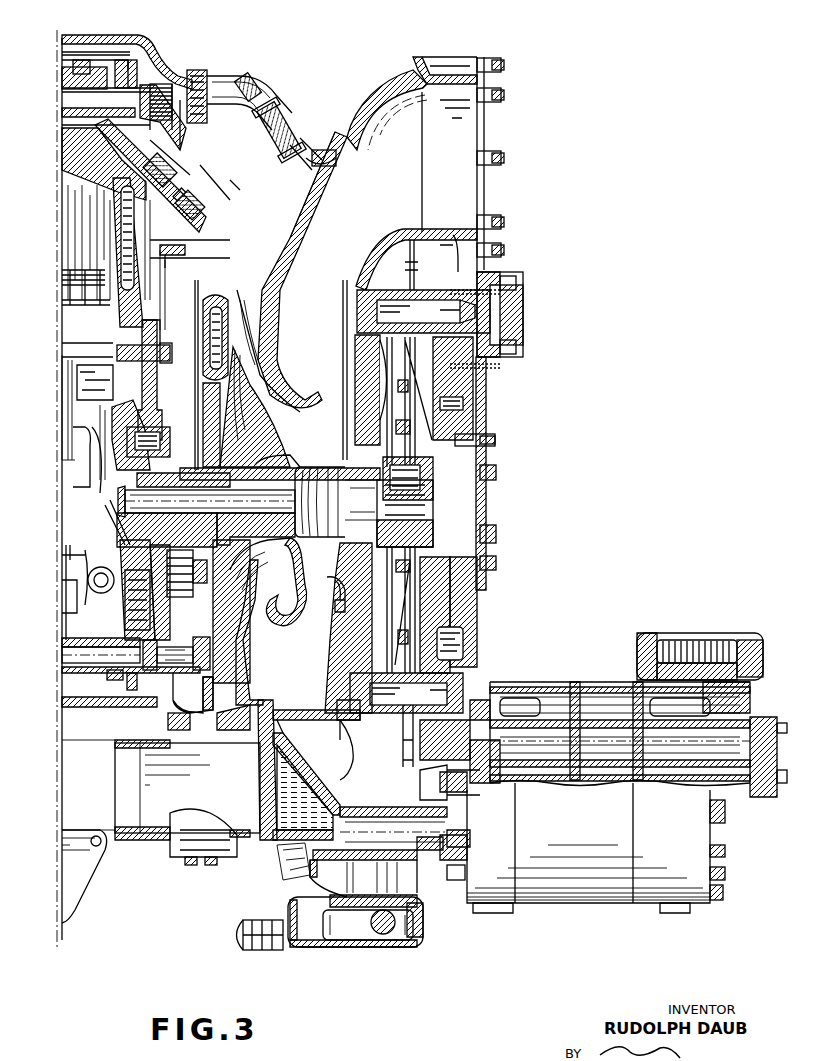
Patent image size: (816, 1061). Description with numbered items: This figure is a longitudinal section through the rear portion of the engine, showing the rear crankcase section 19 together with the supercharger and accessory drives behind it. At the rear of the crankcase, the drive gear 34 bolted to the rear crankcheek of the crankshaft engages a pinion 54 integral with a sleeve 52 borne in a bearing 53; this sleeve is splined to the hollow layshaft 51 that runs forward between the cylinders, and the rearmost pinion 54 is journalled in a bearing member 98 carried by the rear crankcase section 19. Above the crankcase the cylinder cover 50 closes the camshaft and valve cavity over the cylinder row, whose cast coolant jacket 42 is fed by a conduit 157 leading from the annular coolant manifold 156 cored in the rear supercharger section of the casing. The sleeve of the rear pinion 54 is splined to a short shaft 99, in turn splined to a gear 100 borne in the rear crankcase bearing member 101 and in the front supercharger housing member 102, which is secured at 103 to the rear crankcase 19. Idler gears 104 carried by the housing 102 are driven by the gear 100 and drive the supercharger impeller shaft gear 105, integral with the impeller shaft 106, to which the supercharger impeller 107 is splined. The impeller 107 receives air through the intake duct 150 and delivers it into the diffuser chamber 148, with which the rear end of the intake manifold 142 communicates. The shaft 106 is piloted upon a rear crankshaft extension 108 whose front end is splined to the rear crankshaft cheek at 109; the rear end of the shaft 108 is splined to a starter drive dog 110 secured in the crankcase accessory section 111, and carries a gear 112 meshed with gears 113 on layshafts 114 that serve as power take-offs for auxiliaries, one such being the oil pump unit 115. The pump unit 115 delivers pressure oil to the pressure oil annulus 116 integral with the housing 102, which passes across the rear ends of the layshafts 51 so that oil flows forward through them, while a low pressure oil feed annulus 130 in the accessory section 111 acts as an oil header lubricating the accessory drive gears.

The rear crankcase section 19 is at (88, 706).
The drive gear 34 is at (118, 596).
The coolant jacket 42 is at (142, 165).
The cylinder cover 50 is at (140, 40).
The layshaft 51 is at (66, 644).
The sleeve 52 is at (120, 670).
The bearing 53 is at (107, 678).
The pinion 54 is at (127, 684).
The bearing member 98 is at (124, 626).
The short shaft 99 is at (172, 680).
The gear 100 is at (188, 703).
The rear crankcase bearing member 101 is at (152, 398).
The front supercharger housing member 102 is at (202, 412).
The securing means 103 is at (162, 723).
The idler gear 104 is at (182, 580).
The supercharger impeller shaft gear 105 is at (174, 458).
The impeller shaft 106 is at (255, 462).
The supercharger impeller 107 is at (245, 430).
The rear crankshaft extension 108 is at (210, 510).
The spline connection 109 is at (150, 495).
The starter drive dog 110 is at (412, 510).
The crankcase accessory section 111 is at (475, 392).
The gear 112 is at (386, 590).
The gear 113 is at (418, 268).
The layshaft 114 is at (420, 304).
The oil pump unit 115 is at (527, 679).
The pressure oil annulus 116 is at (233, 337).
The low pressure oil feed annulus 130 is at (462, 643).
The intake manifold 142 is at (108, 855).
The diffuser chamber 148 is at (169, 782).
The intake duct 150 is at (371, 232).
The annular coolant manifold 156 is at (300, 226).
The conduit 157 is at (270, 100).